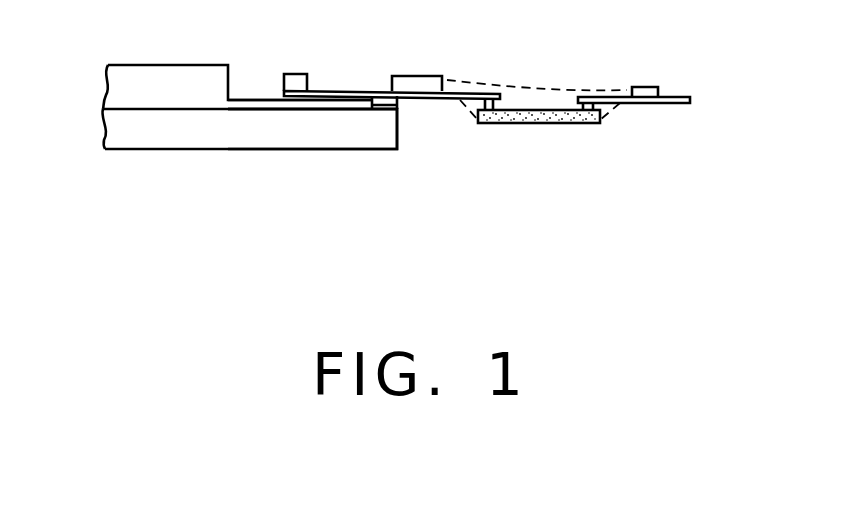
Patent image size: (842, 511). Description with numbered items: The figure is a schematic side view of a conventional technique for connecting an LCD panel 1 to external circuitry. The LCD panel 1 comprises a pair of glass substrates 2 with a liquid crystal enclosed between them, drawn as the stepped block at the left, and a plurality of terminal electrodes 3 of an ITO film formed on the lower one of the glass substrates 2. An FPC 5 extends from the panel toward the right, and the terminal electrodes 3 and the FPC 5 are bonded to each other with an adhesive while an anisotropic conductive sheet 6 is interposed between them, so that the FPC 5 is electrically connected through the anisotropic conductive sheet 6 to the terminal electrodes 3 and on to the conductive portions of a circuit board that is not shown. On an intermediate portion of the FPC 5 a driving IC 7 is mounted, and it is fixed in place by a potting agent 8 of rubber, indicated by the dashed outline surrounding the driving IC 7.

The LCD panel 1 is at (102, 128).
The glass substrates 2 is at (203, 95).
The terminal electrodes 3 is at (298, 107).
The FPC 5 is at (372, 93).
The anisotropic conductive sheet 6 is at (348, 100).
The driving IC 7 is at (568, 125).
The potting agent 8 is at (567, 90).